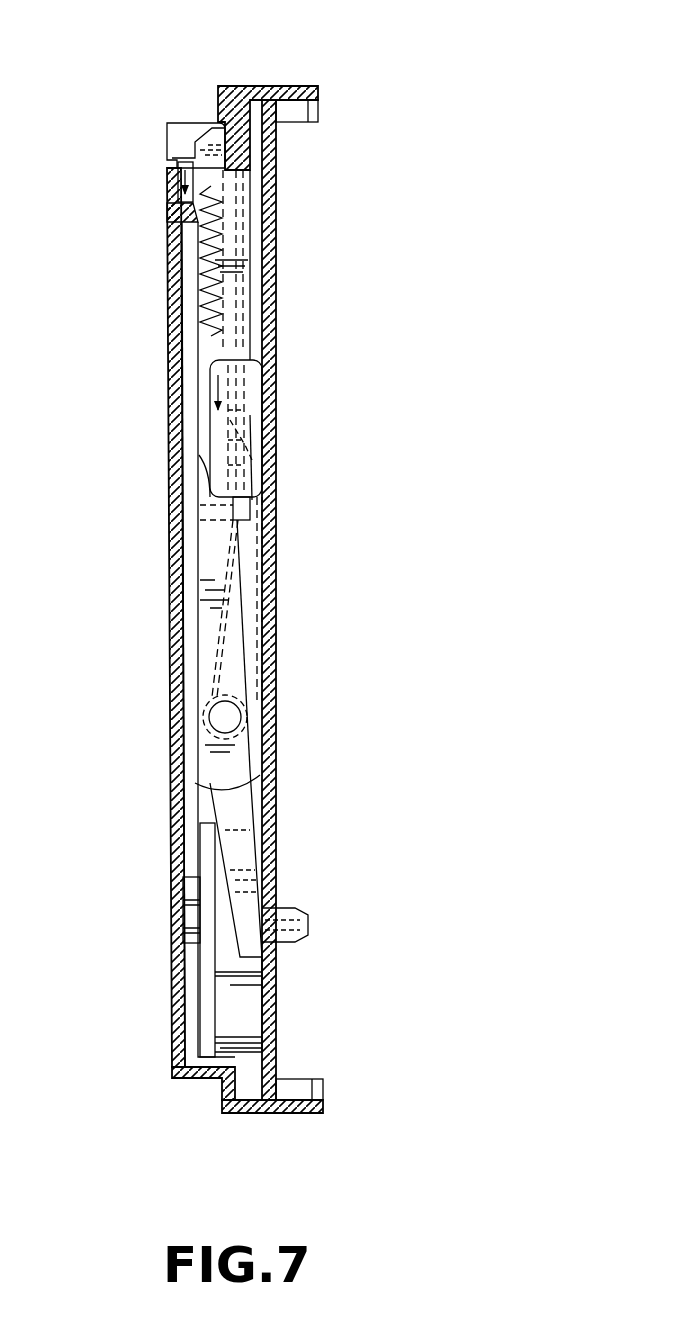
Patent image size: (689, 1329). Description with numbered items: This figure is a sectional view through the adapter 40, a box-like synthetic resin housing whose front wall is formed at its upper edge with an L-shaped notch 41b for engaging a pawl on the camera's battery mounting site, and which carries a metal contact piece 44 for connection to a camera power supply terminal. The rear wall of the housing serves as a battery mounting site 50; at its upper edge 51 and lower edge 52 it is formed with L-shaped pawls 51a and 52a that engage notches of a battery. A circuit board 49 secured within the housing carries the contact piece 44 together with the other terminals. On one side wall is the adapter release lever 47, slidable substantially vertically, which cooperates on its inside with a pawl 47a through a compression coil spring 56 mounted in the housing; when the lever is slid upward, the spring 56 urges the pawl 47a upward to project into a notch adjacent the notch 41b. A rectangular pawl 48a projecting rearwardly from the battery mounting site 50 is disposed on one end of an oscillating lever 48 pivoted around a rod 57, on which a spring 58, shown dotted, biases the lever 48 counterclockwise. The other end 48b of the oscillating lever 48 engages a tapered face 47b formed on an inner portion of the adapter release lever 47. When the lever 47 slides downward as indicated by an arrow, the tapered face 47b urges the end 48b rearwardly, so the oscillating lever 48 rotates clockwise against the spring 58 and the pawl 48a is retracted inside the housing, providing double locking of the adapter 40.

The adapter 40 is at (163, 620).
The L-shaped notch 41b is at (186, 128).
The metal contact piece 44 is at (185, 922).
The adapter release lever 47 is at (265, 512).
The pawl 47a is at (190, 147).
The tapered face 47b is at (277, 421).
The oscillating lever 48 is at (245, 800).
The rectangular pawl 48a is at (310, 930).
The other end of oscillating lever 48b is at (262, 438).
The circuit board 49 is at (203, 872).
The battery mounting site 50 is at (277, 345).
The upper edge 51 is at (293, 86).
The L-shaped pawl 51a is at (320, 108).
The lower edge 52 is at (298, 1113).
The L-shaped pawl 52a is at (323, 1092).
The compression coil spring 56 is at (277, 252).
The rod 57 is at (235, 718).
The spring 58 is at (258, 633).